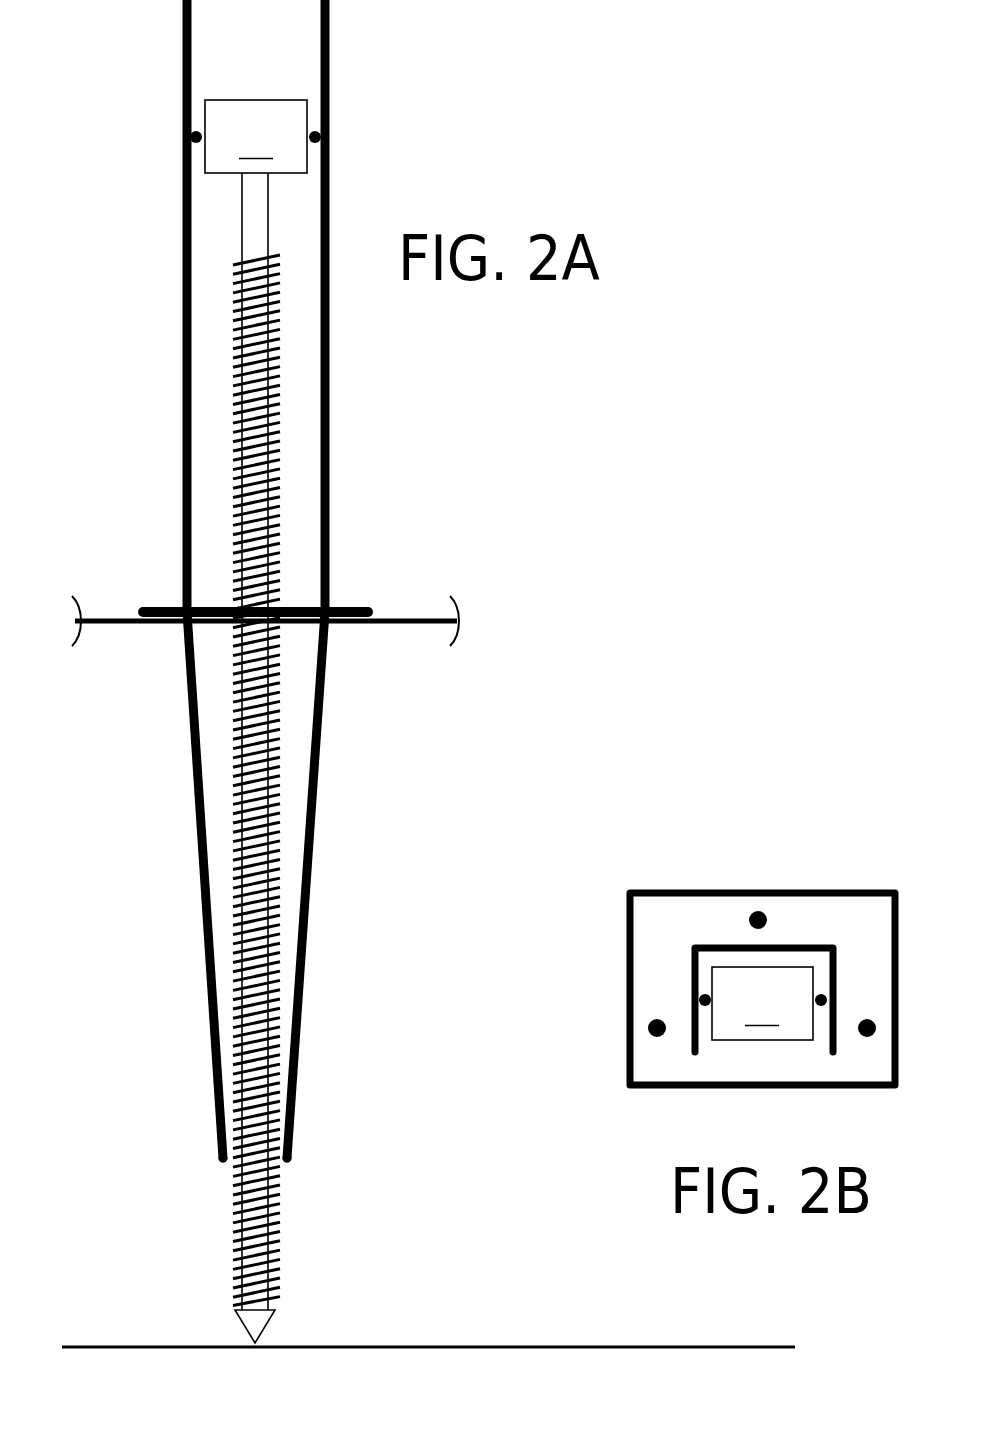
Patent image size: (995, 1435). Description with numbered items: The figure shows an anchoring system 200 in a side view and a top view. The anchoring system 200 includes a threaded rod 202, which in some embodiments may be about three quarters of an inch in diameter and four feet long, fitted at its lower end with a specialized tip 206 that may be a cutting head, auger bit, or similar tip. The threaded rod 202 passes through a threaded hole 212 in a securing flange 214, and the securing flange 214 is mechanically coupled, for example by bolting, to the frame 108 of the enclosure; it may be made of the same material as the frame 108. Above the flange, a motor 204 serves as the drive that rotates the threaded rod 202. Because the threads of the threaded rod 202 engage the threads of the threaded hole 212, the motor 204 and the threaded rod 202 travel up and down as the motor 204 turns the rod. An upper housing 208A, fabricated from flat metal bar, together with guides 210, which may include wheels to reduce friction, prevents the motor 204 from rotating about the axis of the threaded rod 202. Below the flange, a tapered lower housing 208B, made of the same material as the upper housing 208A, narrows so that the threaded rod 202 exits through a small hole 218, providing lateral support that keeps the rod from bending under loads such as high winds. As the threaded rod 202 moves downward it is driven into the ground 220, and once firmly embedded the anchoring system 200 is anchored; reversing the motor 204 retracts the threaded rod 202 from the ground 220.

In FIG. 2A, the anchoring system 200 is at (916, 62).
In FIG. 2A, the threaded rod 202 is at (300, 1218).
In FIG. 2A, the motor 204 is at (256, 136).
In FIG. 2B, the motor 204 is at (762, 1003).
In FIG. 2A, the tip 206 is at (300, 1320).
In FIG. 2A, the upper housing 208A is at (343, 480).
In FIG. 2B, the upper housing 208A is at (692, 967).
In FIG. 2A, the lower housing 208B is at (335, 846).
In FIG. 2A, the guides 210 is at (343, 135).
In FIG. 2B, the guides 210 is at (837, 1000).
In FIG. 2A, the threaded hole 212 is at (282, 602).
In FIG. 2A, the securing flange 214 is at (160, 608).
In FIG. 2B, the securing flange 214 is at (861, 932).
In FIG. 2A, the frame 108 is at (388, 626).
In FIG. 2A, the small hole 218 is at (216, 1184).
In FIG. 2A, the ground 220 is at (115, 1328).
In FIG. 2B, the ground 220 is at (647, 1028).